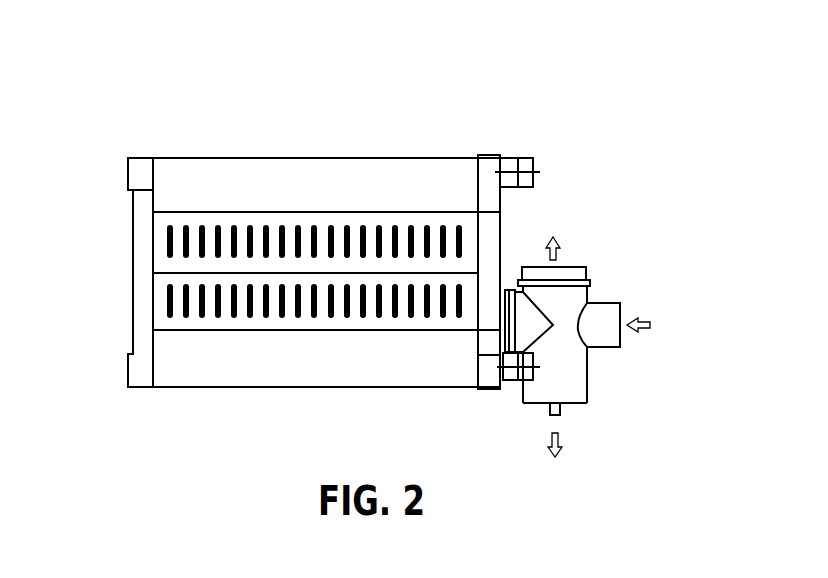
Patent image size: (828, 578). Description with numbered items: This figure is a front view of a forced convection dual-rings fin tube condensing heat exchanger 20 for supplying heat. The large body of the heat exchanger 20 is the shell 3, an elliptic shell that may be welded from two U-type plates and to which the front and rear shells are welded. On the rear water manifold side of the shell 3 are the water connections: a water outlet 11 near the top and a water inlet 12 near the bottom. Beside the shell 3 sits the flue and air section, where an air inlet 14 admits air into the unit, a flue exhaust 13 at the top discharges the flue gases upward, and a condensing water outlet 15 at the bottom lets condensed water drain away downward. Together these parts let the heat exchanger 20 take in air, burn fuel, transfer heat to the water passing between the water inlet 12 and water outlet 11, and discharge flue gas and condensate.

The heat exchanger 20 is at (475, 80).
The shell 3 is at (288, 195).
The water outlet 11 is at (532, 157).
The water inlet 12 is at (512, 382).
The flue exhaust 13 is at (562, 265).
The air inlet 14 is at (620, 317).
The condensing water outlet 15 is at (552, 415).